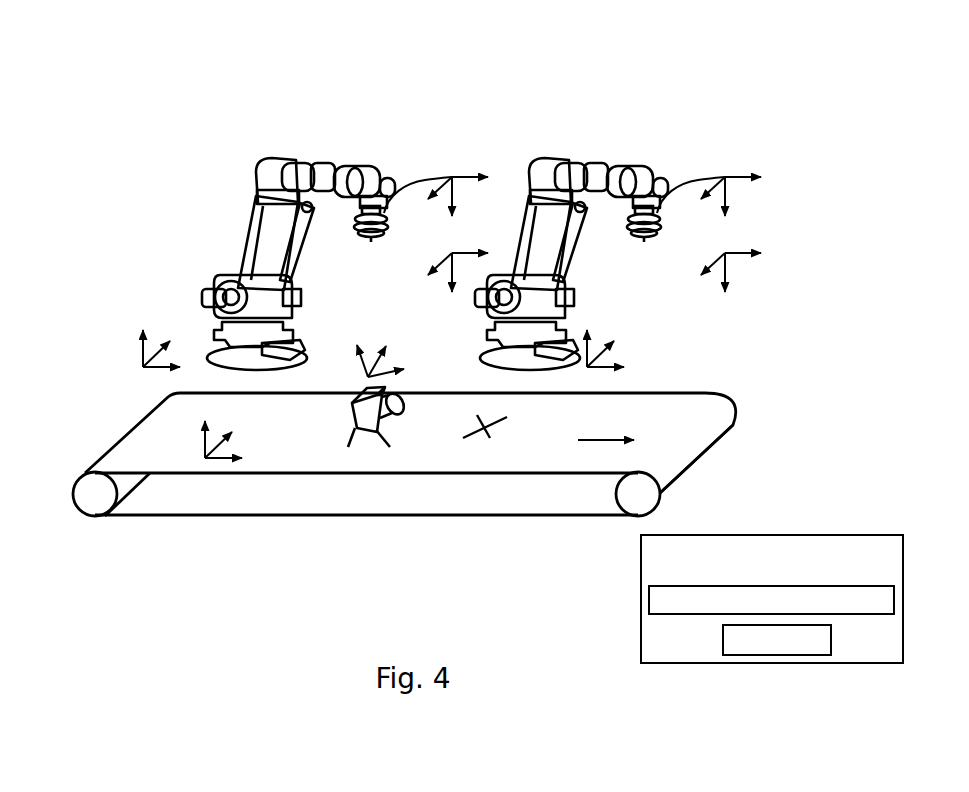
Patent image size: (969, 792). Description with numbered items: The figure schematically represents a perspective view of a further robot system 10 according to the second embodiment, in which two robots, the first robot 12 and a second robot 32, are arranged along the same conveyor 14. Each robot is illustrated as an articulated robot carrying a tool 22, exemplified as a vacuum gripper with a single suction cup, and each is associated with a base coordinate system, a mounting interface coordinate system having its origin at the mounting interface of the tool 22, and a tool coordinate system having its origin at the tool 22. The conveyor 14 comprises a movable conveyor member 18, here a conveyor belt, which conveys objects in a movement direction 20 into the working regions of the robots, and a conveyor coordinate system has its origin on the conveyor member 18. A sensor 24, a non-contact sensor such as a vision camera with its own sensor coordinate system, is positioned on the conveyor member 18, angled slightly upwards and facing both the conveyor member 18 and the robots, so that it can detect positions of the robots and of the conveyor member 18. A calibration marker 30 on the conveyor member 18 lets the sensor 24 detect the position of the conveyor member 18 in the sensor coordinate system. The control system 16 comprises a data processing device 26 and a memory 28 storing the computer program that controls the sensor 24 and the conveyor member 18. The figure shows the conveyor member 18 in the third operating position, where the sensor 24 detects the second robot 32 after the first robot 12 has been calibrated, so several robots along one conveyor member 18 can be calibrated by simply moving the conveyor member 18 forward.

The robot system 10 is at (101, 85).
The robot 12 is at (237, 163).
The second robot 32 is at (522, 163).
The tool 22 is at (452, 253).
The conveyor 14 is at (87, 420).
The conveyor member 18 is at (690, 407).
The movement direction 20 is at (606, 425).
The sensor 24 is at (388, 425).
The calibration marker 30 is at (497, 427).
The control system 16 is at (782, 534).
The data processing device 26 is at (771, 600).
The memory 28 is at (777, 640).